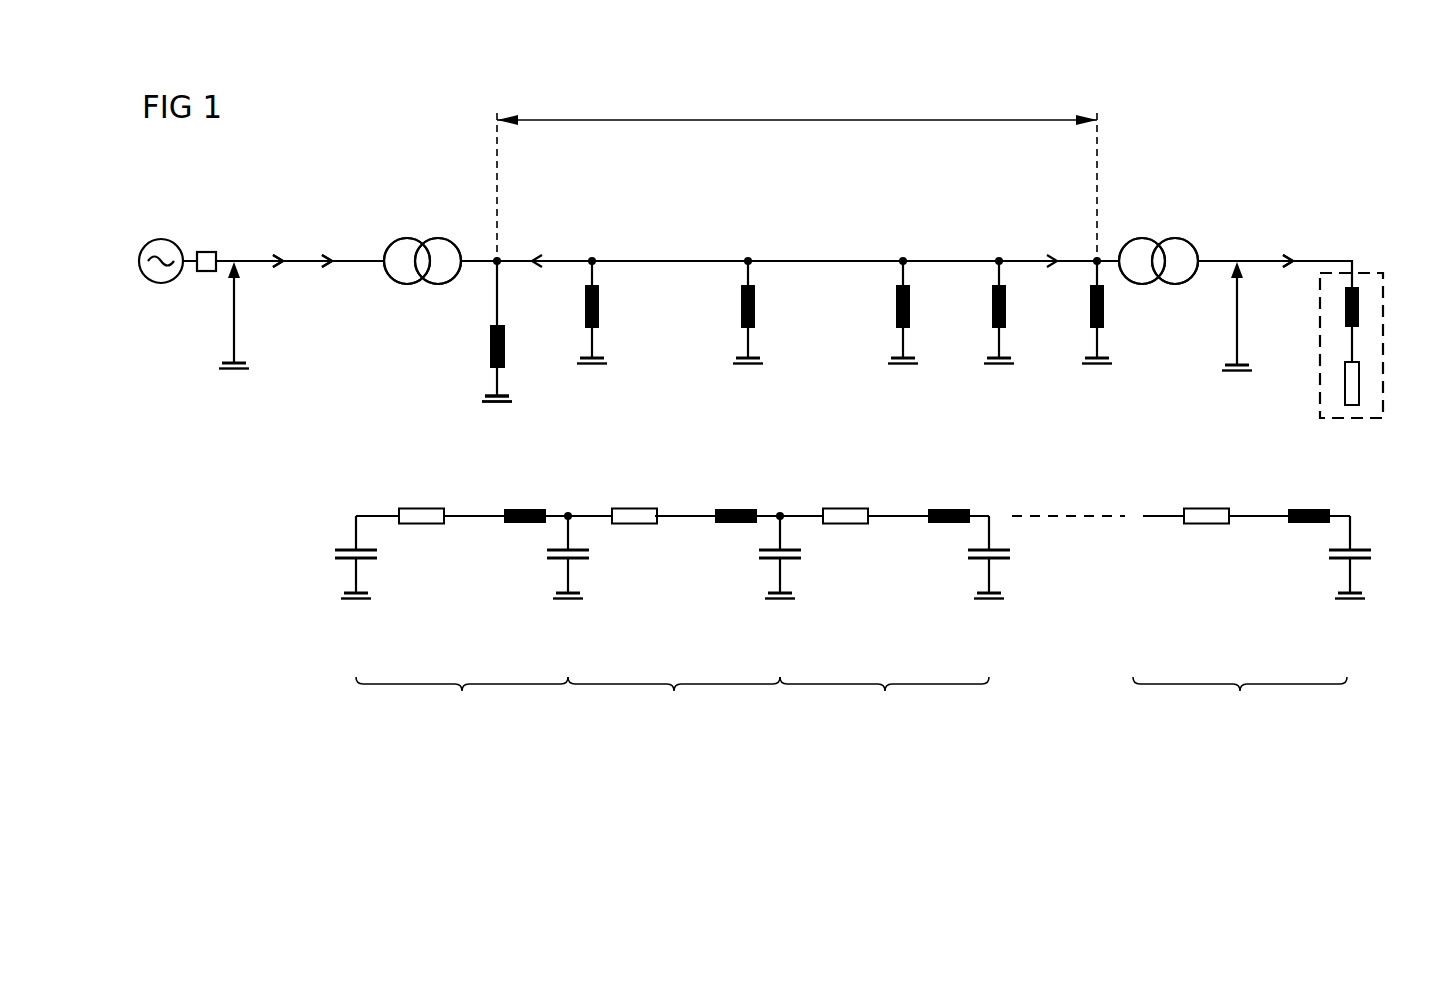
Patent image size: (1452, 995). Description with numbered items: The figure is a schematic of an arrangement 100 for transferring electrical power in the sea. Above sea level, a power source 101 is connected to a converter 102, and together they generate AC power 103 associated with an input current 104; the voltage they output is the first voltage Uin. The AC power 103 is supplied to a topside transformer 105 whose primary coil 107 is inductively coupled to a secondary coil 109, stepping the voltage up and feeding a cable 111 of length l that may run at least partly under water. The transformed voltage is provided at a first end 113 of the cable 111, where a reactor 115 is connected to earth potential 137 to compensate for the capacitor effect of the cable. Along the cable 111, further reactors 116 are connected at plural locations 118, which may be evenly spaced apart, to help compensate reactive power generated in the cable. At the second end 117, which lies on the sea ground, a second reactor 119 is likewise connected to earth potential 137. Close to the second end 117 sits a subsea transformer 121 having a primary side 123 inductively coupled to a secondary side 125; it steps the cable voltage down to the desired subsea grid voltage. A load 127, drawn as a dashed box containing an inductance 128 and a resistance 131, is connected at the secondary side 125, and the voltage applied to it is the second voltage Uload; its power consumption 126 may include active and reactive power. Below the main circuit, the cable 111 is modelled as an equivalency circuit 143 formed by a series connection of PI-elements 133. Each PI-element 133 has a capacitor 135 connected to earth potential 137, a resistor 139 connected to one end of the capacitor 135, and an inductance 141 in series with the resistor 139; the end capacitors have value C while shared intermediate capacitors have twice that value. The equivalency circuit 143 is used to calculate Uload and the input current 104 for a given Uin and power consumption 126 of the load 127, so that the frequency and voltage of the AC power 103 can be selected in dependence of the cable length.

The arrangement 100 is at (1348, 138).
The power source 101 is at (164, 239).
The converter 102 is at (208, 252).
The AC power 103 is at (280, 256).
The input current 104 is at (329, 256).
The topside transformer 105 is at (425, 208).
The primary coil 107 is at (405, 284).
The secondary coil 109 is at (442, 284).
The cable 111 is at (823, 208).
The first end 113 is at (499, 259).
The reactor 115 is at (505, 360).
The further reactors 116 is at (585, 305).
The second end 117 is at (1095, 258).
The locations 118 is at (593, 257).
The second reactor 119 is at (1090, 305).
The subsea transformer 121 is at (1152, 206).
The primary side 123 is at (1140, 284).
The secondary side 125 is at (1177, 284).
The power consumption 126 is at (1291, 256).
The load 127 is at (1366, 272).
The load inductance 128 is at (1359, 306).
The resistance 131 is at (1359, 384).
The PI-element 133 is at (851, 704).
The capacitor 135 is at (335, 553).
The earth potential 137 is at (498, 404).
The resistor 139 is at (421, 525).
The inductance 141 is at (526, 508).
The equivalency circuit 143 is at (800, 455).